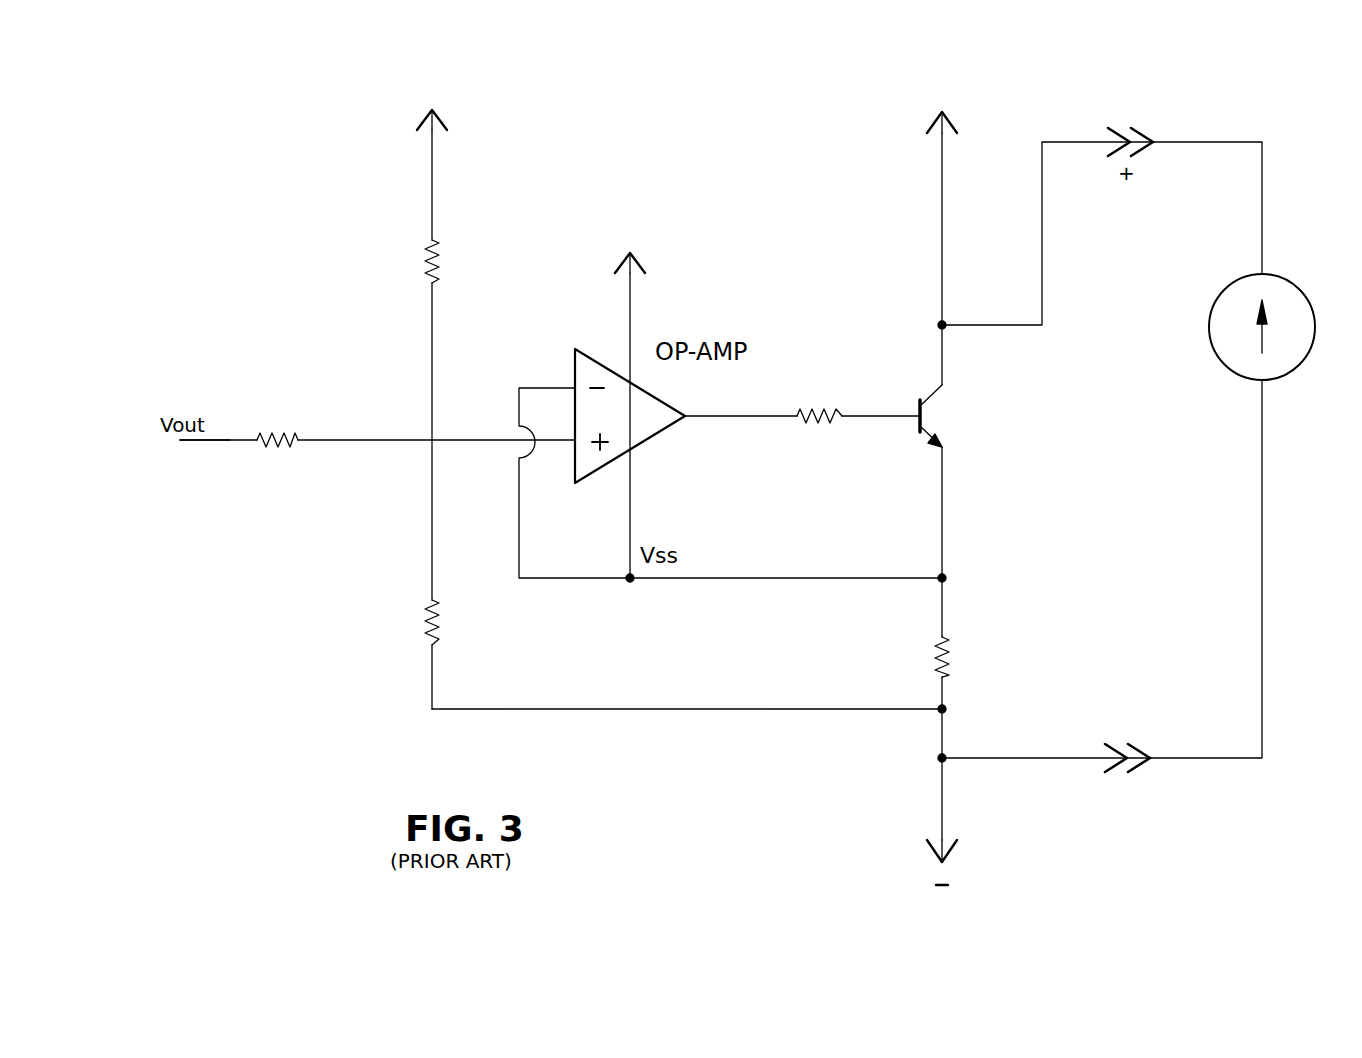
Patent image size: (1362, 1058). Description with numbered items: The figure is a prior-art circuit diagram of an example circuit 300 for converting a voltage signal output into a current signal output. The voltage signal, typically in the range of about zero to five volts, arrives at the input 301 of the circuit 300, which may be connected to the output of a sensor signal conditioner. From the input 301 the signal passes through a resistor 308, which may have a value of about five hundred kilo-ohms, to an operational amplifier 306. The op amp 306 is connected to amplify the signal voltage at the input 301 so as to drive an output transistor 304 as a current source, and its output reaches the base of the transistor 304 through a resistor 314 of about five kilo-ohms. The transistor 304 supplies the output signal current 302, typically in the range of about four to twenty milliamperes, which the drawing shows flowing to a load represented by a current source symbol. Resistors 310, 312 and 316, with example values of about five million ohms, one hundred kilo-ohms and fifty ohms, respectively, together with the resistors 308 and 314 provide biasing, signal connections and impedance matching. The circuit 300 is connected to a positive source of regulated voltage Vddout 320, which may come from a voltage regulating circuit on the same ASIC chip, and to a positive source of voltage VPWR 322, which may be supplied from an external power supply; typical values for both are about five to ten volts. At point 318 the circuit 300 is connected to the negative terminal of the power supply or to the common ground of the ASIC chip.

The circuit 300 is at (266, 102).
The input 301 is at (213, 450).
The current output signal 302 is at (1309, 353).
The output transistor 304 is at (918, 402).
The operational amplifier 306 is at (657, 437).
The resistor 308 is at (292, 430).
The resistor 310 is at (428, 248).
The resistor 312 is at (432, 606).
The resistor 314 is at (820, 405).
The resistor 316 is at (942, 640).
The point 318 is at (942, 806).
The Vddout 320 is at (432, 166).
The VPWR 322 is at (942, 210).